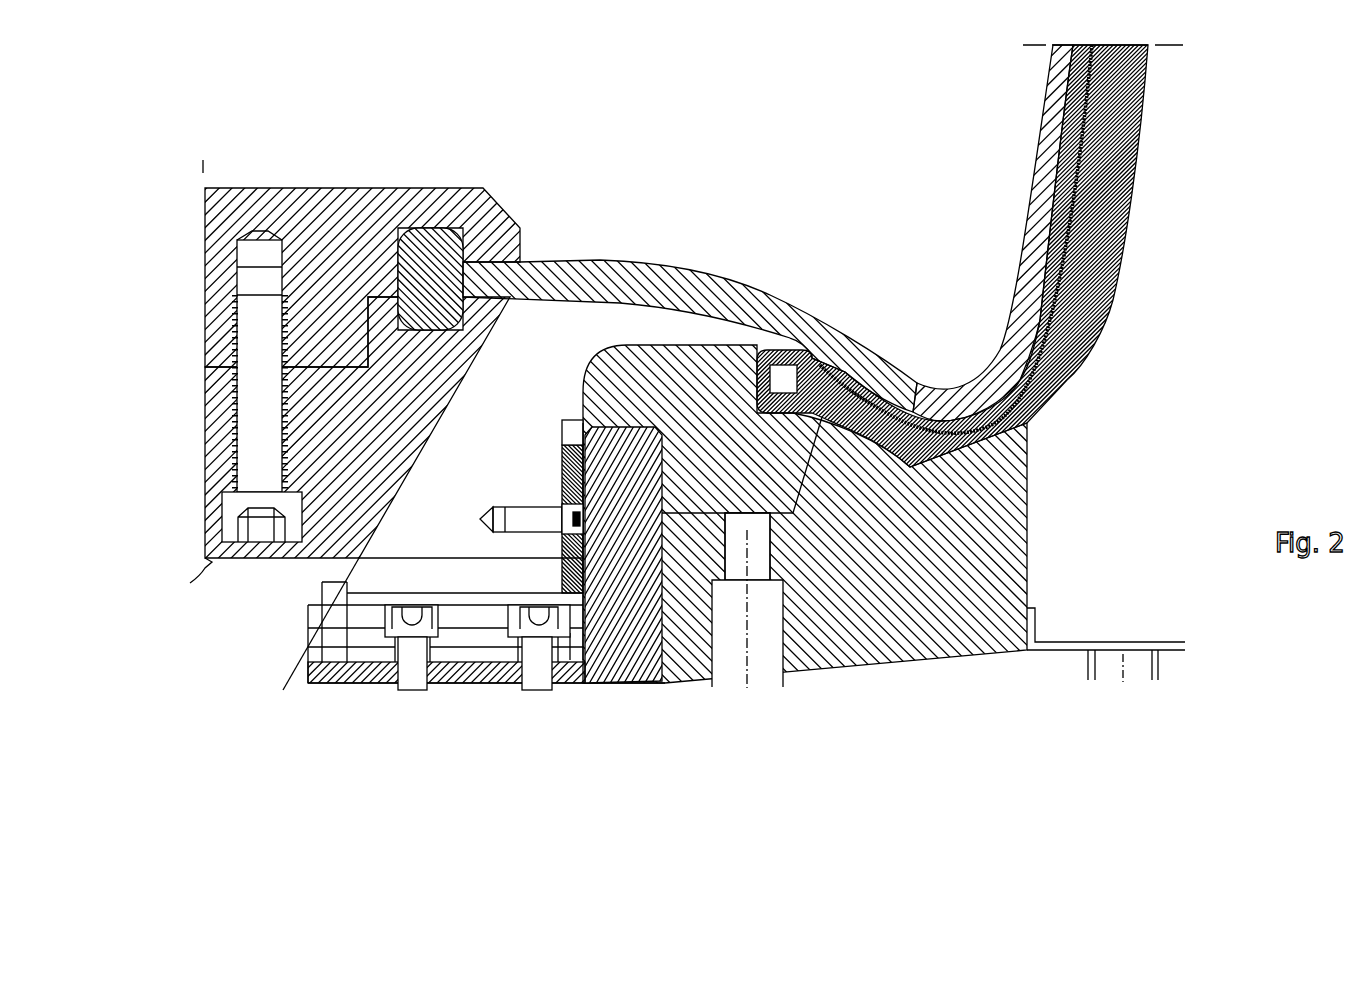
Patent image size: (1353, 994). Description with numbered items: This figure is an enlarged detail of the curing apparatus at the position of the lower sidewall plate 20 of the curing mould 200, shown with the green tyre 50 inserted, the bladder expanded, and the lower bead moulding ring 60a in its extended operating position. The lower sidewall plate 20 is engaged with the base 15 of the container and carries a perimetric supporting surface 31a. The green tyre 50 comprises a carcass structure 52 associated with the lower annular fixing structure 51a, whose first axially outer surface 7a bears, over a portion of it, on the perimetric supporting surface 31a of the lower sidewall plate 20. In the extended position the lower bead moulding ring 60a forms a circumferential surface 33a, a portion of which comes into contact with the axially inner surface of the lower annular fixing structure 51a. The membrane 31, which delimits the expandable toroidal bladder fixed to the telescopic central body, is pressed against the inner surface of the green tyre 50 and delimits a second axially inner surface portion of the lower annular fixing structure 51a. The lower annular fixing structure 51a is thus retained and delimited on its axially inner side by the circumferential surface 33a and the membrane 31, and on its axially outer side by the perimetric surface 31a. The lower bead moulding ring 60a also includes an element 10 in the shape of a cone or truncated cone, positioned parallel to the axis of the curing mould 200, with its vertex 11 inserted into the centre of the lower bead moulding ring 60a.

The element in the shape of a cone or truncated cone 10 is at (398, 381).
The vertex 11 is at (210, 560).
The base 15 is at (247, 637).
The lower sidewall plate 20 is at (788, 497).
The membrane 31 is at (606, 274).
The perimetric supporting surface 31a is at (786, 350).
The circumferential surface 33a is at (703, 345).
The green tyre 50 is at (1164, 278).
The lower annular fixing structure 51a is at (795, 415).
The carcass structure 52 is at (1076, 193).
The lower bead moulding ring 60a is at (586, 333).
The first axially outer surface 7a is at (773, 412).
The curing mould 200 is at (601, 700).